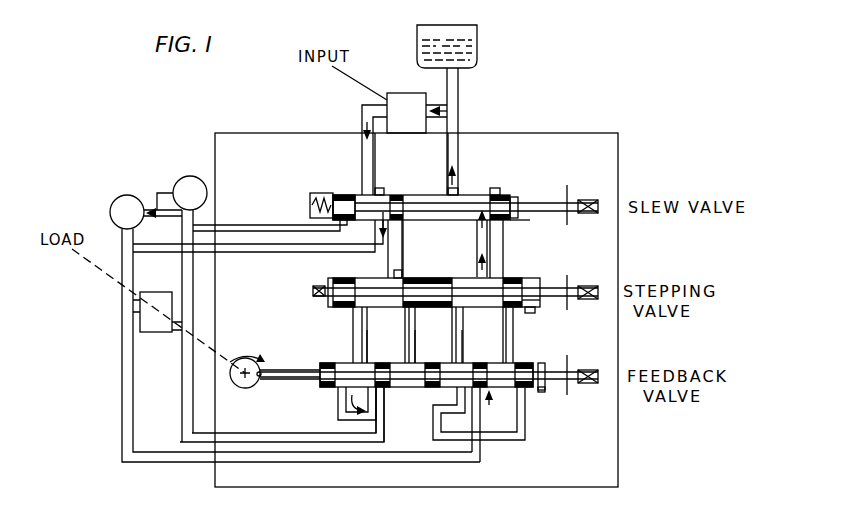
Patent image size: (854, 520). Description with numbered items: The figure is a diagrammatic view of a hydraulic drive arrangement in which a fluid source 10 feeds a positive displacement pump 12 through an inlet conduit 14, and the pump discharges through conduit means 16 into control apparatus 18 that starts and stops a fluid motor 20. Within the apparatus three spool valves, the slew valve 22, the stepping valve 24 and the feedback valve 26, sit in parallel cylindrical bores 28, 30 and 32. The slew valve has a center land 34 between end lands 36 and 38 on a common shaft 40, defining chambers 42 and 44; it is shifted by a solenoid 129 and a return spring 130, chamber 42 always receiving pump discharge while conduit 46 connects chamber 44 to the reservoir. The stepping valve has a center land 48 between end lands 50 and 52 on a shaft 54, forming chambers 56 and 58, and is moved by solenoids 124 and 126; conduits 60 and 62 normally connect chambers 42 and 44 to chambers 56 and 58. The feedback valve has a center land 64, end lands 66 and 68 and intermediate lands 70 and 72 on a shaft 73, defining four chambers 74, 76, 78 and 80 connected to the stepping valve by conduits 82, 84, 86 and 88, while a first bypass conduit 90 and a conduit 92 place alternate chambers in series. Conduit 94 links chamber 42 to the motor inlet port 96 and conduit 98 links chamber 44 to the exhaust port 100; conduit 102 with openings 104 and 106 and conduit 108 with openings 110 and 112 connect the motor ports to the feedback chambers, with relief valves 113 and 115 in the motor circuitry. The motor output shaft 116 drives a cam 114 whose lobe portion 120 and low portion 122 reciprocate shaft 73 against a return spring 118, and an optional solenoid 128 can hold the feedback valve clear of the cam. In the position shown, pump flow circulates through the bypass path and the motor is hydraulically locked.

The fluid source 10 is at (478, 48).
The positive displacement pump 12 is at (390, 93).
The inlet conduit 14 is at (447, 100).
The conduit means 16 is at (362, 116).
The control apparatus 18 is at (582, 133).
The fluid motor 20 is at (172, 334).
The slew valve 22 is at (552, 192).
The stepping valve 24 is at (553, 284).
The feedback valve 26 is at (560, 364).
The cylindrical bore 28 is at (515, 194).
The cylindrical bore 30 is at (516, 278).
The cylindrical bore 32 is at (547, 366).
The center land 34 is at (410, 194).
The end land 36 is at (338, 194).
The end land 38 is at (492, 192).
The shaft 40 is at (516, 218).
The chamber 42 is at (380, 193).
The chamber 44 is at (460, 193).
The conduit 46 is at (458, 137).
The center land 48 is at (447, 273).
The end land 50 is at (340, 278).
The end land 52 is at (536, 310).
The shaft 54 is at (532, 303).
The chamber 56 is at (398, 278).
The chamber 58 is at (492, 278).
The conduit 60 is at (386, 236).
The conduit 62 is at (476, 240).
The center land 64 is at (431, 363).
The end land 66 is at (322, 363).
The end land 68 is at (522, 363).
The intermediate land 70 is at (381, 363).
The intermediate land 72 is at (477, 363).
The shaft 73 is at (298, 378).
The fluid chamber 74 is at (369, 358).
The fluid chamber 76 is at (413, 358).
The fluid chamber 78 is at (460, 358).
The fluid chamber 80 is at (512, 314).
The conduit 82 is at (356, 322).
The conduit 84 is at (400, 320).
The conduit 86 is at (447, 320).
The conduit 88 is at (496, 320).
The first bypass conduit 90 is at (338, 418).
The conduit 92 is at (517, 438).
The conduit 94 is at (255, 225).
The inlet port 96 is at (176, 292).
The conduit 98 is at (268, 252).
The exhaust port 100 is at (141, 331).
The conduit 102 is at (259, 433).
The opening 104 is at (340, 410).
The opening 106 is at (387, 412).
The conduit 108 is at (168, 452).
The opening 110 is at (505, 418).
The opening 112 is at (502, 394).
The relief valve 113 is at (127, 195).
The cam 114 is at (255, 360).
The relief valve 115 is at (190, 176).
The output shaft 116 is at (86, 262).
The return spring 118 is at (543, 392).
The lobe portion 120 is at (242, 386).
The low portion 122 is at (262, 380).
The solenoid 124 is at (313, 291).
The solenoid 126 is at (589, 286).
The solenoid 128 is at (589, 384).
The solenoid 129 is at (589, 200).
The return spring 130 is at (312, 198).